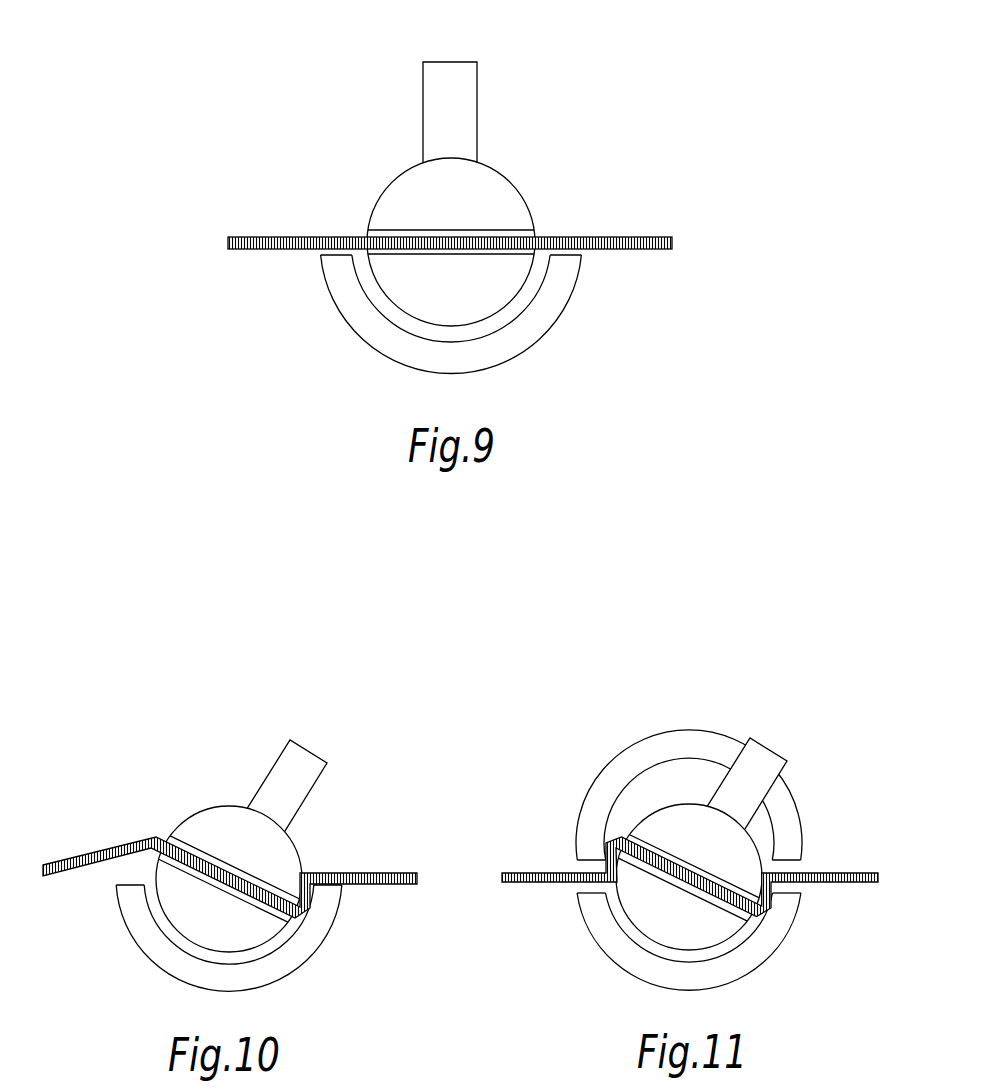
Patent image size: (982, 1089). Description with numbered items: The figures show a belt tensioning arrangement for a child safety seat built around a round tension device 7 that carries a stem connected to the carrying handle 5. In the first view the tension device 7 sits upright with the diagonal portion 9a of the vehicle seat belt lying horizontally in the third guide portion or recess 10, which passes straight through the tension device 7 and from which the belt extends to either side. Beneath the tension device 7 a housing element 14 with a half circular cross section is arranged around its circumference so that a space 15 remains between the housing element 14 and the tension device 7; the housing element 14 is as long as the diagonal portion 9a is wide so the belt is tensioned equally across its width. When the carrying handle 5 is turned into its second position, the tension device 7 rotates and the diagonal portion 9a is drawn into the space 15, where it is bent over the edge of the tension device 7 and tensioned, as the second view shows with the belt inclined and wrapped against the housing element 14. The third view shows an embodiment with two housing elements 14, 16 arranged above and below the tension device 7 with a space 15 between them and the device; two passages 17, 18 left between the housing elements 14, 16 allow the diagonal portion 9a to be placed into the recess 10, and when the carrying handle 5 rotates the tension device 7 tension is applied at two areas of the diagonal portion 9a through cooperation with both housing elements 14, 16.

In FIG. 9, the carrying handle 5 is at (467, 93).
In FIG. 10, the carrying handle 5 is at (282, 765).
In FIG. 11, the carrying handle 5 is at (748, 750).
In FIG. 9, the tension device 7 is at (492, 188).
In FIG. 10, the tension device 7 is at (212, 832).
In FIG. 11, the tension device 7 is at (650, 918).
In FIG. 9, the diagonal portion 9a is at (288, 237).
In FIG. 10, the diagonal portion 9a is at (357, 873).
In FIG. 11, the diagonal portion 9a is at (822, 873).
In FIG. 9, the third guide portion/recess 10 is at (377, 250).
In FIG. 9, the housing element 14 is at (567, 273).
In FIG. 10, the housing element 14 is at (292, 958).
In FIG. 11, the housing element 14 is at (740, 963).
In FIG. 9, the space 15 is at (500, 320).
In FIG. 11, the space 15 is at (640, 820).
In FIG. 11, the housing element 16 is at (668, 778).
In FIG. 11, the passage 17 is at (790, 887).
In FIG. 11, the passage 18 is at (585, 887).